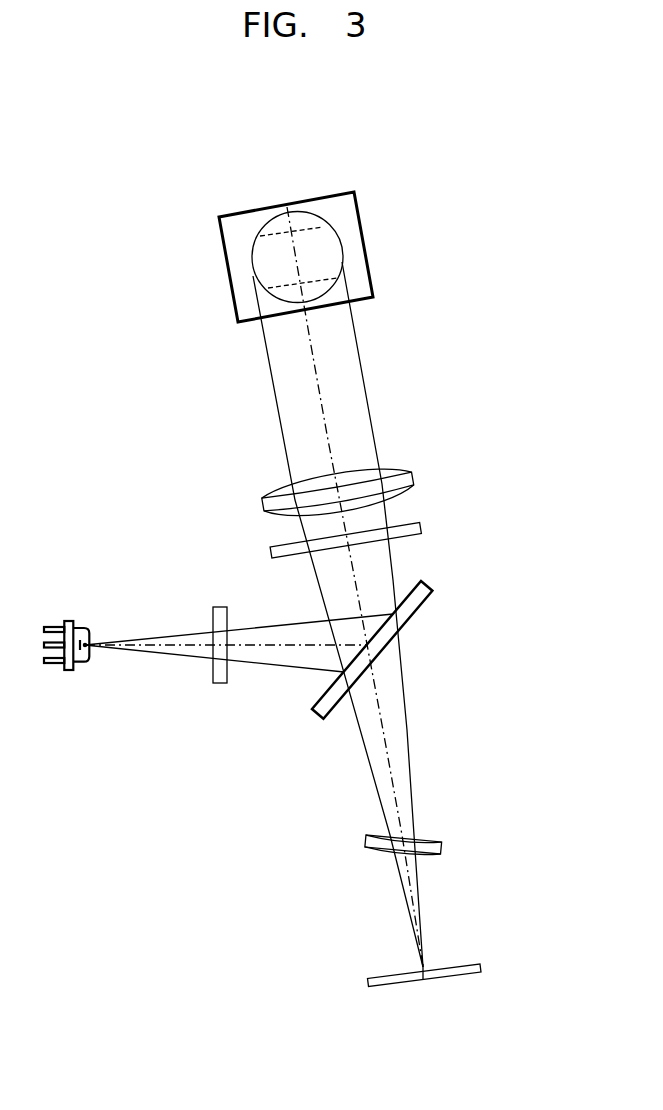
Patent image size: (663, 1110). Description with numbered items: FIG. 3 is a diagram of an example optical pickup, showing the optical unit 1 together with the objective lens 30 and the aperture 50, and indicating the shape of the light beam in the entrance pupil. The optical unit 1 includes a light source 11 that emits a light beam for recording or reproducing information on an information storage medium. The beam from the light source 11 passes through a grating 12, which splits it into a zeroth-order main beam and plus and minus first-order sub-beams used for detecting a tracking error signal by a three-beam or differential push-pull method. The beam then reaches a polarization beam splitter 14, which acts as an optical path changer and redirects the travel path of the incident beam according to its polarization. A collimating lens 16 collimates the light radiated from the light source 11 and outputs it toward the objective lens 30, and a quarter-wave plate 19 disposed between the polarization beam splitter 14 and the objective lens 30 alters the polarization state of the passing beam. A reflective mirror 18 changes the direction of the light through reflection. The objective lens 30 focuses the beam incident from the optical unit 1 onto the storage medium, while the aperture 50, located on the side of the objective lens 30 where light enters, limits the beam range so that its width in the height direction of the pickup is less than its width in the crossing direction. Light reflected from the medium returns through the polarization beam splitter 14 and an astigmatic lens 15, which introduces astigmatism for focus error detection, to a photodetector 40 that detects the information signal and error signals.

The optical unit 1 is at (184, 469).
The light source 11 is at (72, 621).
The grating 12 is at (220, 607).
The polarization beam splitter 14 is at (413, 605).
The astigmatic lens 15 is at (441, 848).
The collimating lens 16 is at (410, 480).
The reflective mirror 18 is at (363, 243).
The quarter-wave plate 19 is at (422, 528).
The objective lens 30 is at (305, 210).
The photodetector 40 is at (482, 968).
The aperture 50 is at (270, 232).